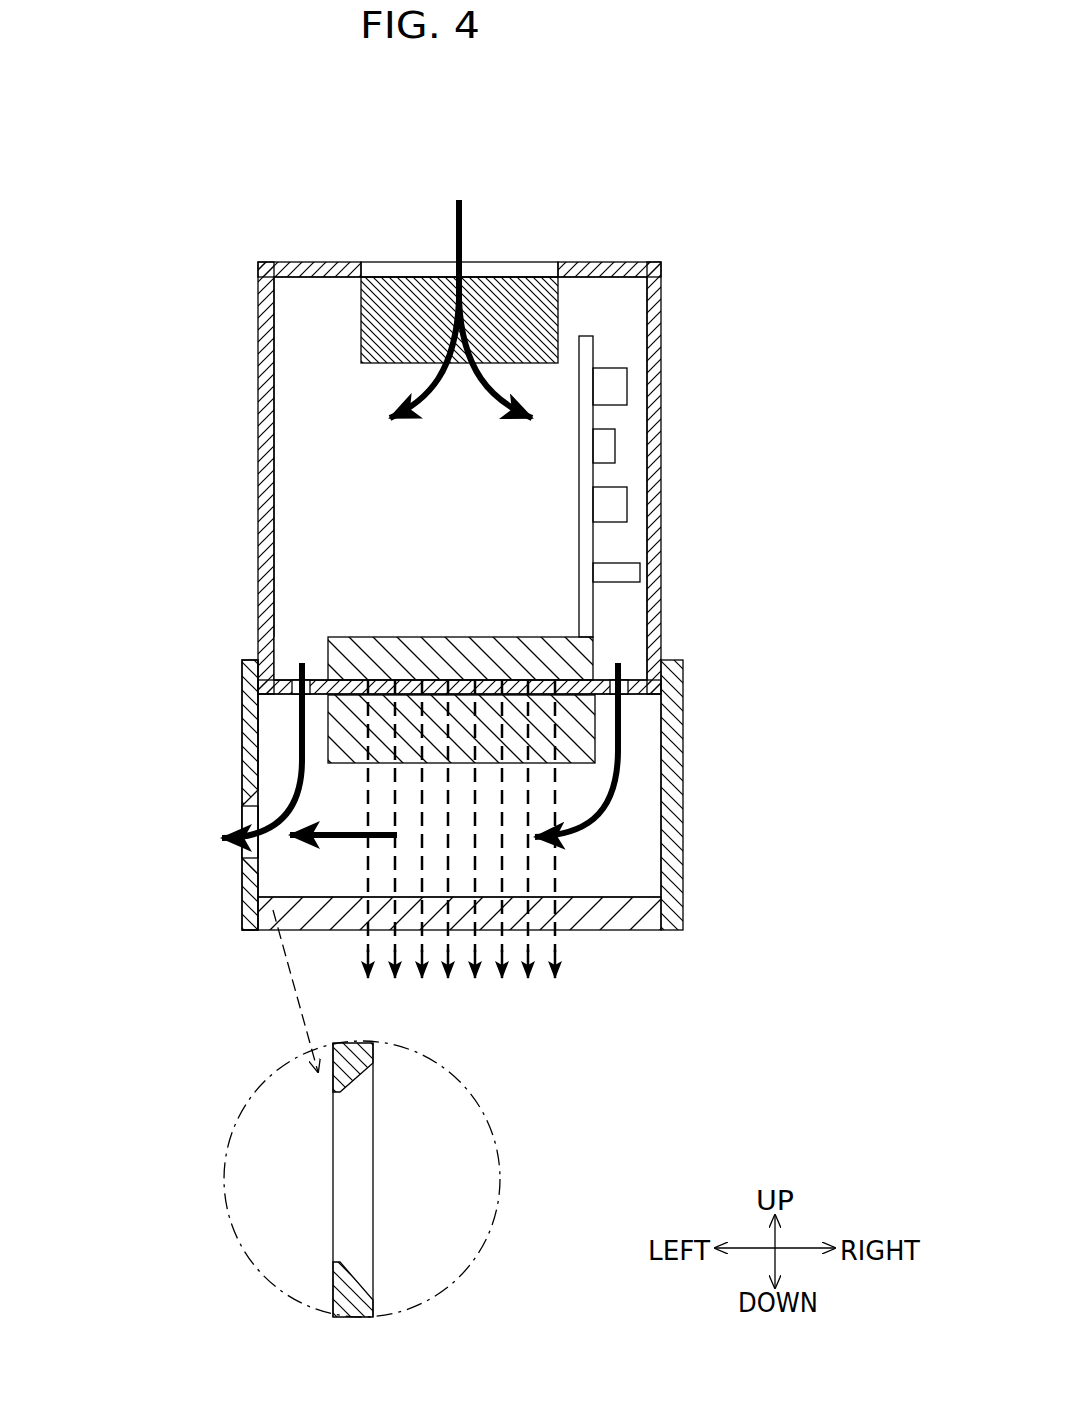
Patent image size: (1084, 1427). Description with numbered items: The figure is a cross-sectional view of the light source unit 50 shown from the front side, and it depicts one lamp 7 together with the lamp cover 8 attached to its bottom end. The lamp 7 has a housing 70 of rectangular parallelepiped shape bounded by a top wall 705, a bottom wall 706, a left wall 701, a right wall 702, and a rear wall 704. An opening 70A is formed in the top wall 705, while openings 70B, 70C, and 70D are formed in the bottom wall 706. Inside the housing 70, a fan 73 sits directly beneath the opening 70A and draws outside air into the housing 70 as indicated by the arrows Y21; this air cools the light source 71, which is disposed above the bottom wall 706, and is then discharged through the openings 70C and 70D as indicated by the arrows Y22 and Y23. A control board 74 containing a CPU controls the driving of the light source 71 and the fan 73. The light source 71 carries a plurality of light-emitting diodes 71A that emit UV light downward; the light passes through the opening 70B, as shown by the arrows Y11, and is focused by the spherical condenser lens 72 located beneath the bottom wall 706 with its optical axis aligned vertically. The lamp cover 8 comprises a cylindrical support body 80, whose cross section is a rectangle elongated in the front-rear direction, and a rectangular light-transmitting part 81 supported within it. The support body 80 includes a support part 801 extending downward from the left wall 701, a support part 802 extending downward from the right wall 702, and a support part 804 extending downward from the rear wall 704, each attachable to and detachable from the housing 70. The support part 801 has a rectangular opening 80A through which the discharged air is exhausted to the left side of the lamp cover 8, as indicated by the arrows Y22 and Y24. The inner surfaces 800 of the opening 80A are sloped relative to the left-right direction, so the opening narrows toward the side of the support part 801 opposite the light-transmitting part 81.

The light source unit 50 is at (676, 208).
The lamp 7 is at (471, 402).
The housing 70 is at (660, 352).
The opening 70A is at (372, 262).
The opening 70B is at (330, 640).
The opening 70C is at (293, 680).
The opening 70D is at (626, 672).
The left wall 701 is at (259, 440).
The right wall 702 is at (662, 466).
The rear wall 704 is at (312, 312).
The top wall 705 is at (577, 262).
The bottom wall 706 is at (600, 683).
The light source 71 is at (585, 642).
The light-emitting diodes 71A is at (437, 680).
The condenser lens 72 is at (590, 716).
The fan 73 is at (500, 277).
The control board 74 is at (586, 428).
The lamp cover 8 is at (465, 774).
The support body 80 is at (262, 872).
The opening 80A is at (255, 764).
The inner surfaces 800 is at (335, 1103).
The support part 801 is at (242, 703).
The support part 802 is at (661, 707).
The support part 804 is at (630, 766).
The light-transmitting part 81 is at (246, 924).
The arrows Y11 is at (452, 980).
The arrows Y21 is at (420, 377).
The arrows Y22 is at (255, 815).
The arrows Y23 is at (606, 773).
The arrows Y24 is at (325, 910).